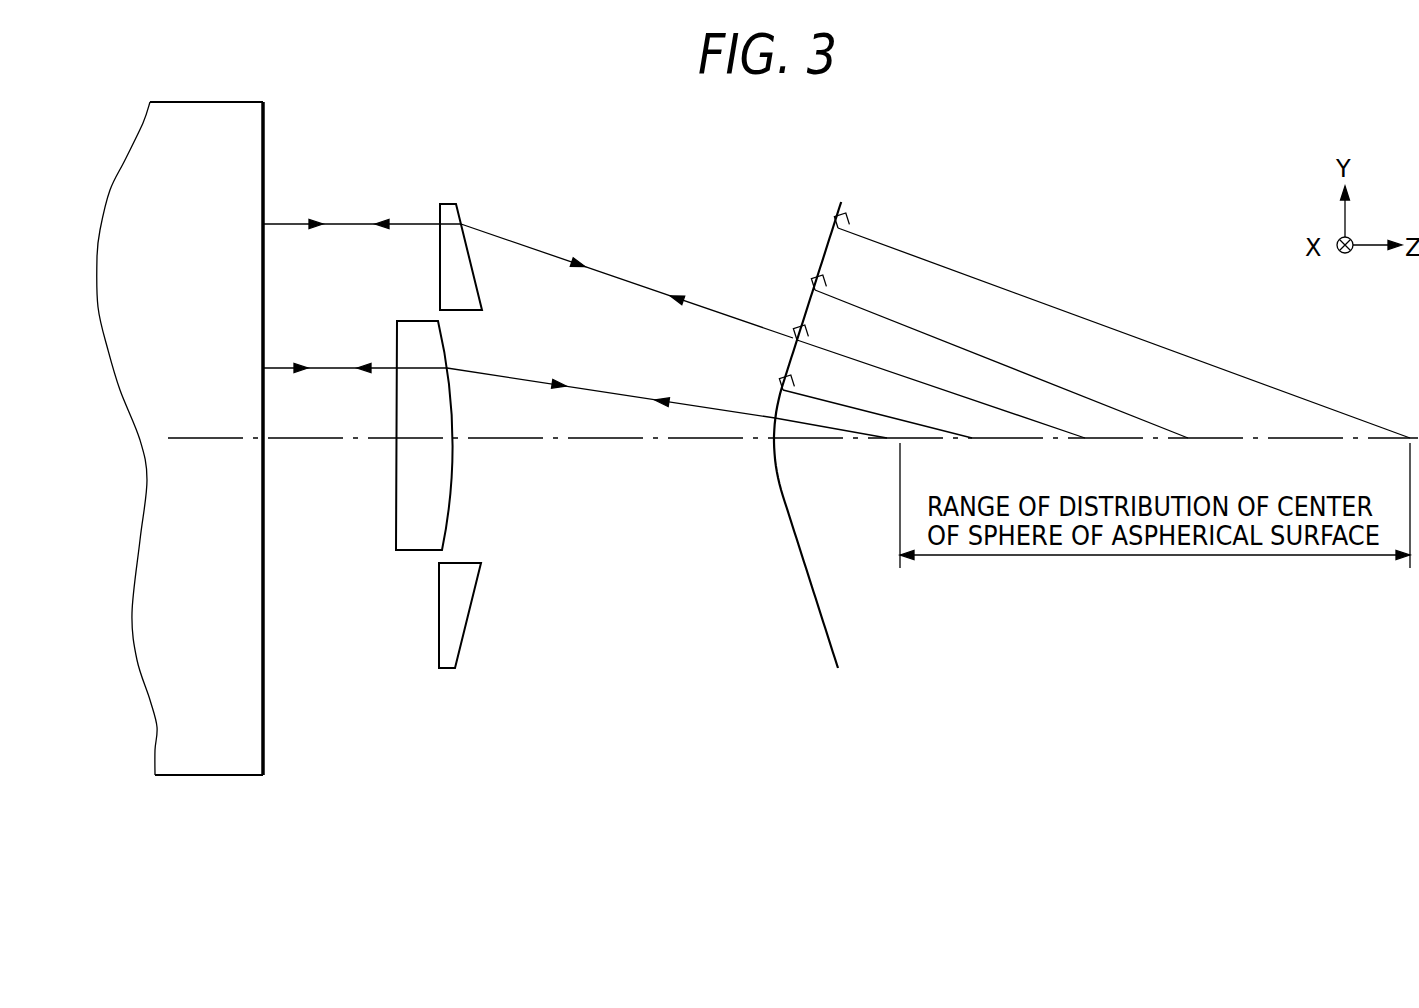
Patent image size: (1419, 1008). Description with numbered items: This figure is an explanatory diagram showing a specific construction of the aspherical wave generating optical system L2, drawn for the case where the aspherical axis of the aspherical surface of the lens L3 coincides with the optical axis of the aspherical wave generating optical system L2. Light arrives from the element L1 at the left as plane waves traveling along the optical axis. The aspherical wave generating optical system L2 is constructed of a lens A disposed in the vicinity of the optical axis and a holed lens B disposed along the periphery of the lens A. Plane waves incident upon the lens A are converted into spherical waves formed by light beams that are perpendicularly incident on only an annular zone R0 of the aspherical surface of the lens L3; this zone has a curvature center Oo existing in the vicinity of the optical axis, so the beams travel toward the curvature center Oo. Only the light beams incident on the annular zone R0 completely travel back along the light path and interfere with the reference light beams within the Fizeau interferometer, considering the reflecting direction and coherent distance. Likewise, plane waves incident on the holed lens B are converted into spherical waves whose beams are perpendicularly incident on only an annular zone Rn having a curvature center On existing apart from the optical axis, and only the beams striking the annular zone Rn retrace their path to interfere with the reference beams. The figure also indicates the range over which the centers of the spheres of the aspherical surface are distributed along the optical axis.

The first lens group L1 is at (222, 765).
The aspherical wave generating optical system L2 is at (429, 475).
The lens L3 is at (875, 660).
The lens A is at (400, 532).
The holed lens B is at (472, 582).
The annular zone Rn is at (792, 338).
The annular zone R0 is at (775, 417).
The curvature center Oo is at (831, 450).
The curvature center On is at (950, 411).